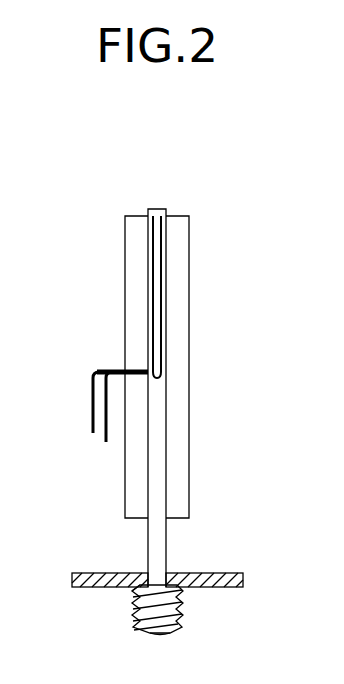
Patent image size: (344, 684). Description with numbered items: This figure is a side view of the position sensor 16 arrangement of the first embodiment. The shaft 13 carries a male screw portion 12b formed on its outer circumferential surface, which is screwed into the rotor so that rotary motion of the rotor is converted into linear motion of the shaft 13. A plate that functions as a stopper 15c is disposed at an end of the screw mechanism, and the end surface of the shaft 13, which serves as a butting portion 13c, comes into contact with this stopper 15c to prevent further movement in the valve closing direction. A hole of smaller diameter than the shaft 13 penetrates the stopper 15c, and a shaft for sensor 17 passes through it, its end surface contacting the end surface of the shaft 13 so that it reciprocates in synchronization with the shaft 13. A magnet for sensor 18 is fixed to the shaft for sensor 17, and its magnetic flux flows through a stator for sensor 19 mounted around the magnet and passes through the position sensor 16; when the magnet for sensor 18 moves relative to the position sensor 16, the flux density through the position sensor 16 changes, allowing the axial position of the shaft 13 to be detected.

The stator for sensor 19 is at (180, 252).
The magnet for sensor 18 is at (162, 312).
The shaft for sensor 17 is at (158, 540).
The position sensor 16 is at (136, 369).
The stopper 15c is at (100, 573).
The shaft 13 is at (182, 603).
The butting portion 13c is at (132, 588).
The male screw portion 12b is at (167, 624).